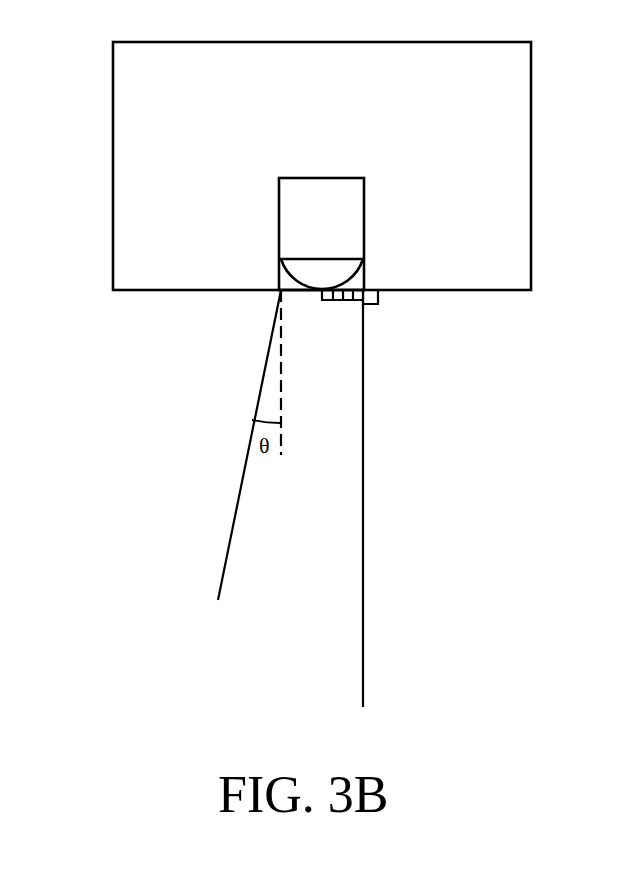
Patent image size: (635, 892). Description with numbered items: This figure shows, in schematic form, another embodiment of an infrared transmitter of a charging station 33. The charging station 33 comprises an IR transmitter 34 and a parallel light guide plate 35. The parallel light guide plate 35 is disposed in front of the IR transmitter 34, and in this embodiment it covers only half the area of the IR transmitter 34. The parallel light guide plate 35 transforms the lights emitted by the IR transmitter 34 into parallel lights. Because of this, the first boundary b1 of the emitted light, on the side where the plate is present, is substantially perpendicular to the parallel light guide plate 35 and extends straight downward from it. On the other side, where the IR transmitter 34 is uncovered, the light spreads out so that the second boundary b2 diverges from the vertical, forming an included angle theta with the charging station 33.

The charging station 33 is at (531, 164).
The IR transmitter 34 is at (364, 219).
The parallel light guide plate 35 is at (340, 302).
The first boundary b1 is at (366, 514).
The second boundary b2 is at (242, 463).